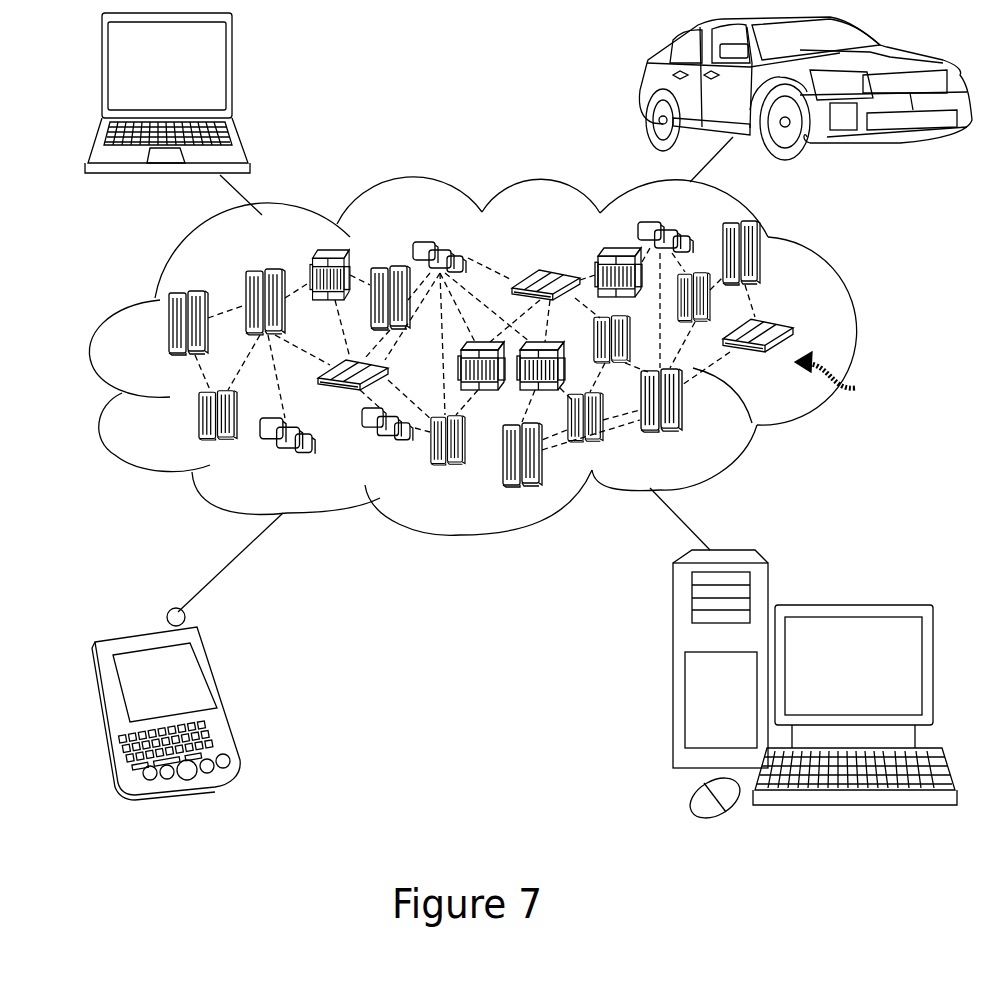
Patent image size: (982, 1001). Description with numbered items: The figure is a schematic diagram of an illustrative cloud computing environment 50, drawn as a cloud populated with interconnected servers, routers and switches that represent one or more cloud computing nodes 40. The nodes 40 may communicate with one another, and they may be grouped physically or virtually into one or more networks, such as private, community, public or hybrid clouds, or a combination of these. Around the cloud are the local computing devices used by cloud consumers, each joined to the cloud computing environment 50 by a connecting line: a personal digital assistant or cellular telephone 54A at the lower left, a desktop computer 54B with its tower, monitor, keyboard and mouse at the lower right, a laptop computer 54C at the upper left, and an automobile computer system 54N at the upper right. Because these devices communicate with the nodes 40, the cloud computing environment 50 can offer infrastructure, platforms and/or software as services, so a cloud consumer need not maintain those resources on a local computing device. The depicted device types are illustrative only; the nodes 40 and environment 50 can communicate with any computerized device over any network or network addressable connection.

The cloud computing nodes 40 is at (844, 380).
The cloud computing environment 50 is at (848, 335).
The personal digital assistant (PDA) or cellular telephone 54A is at (223, 695).
The desktop computer 54B is at (850, 605).
The laptop computer 54C is at (232, 70).
The automobile computer system 54N is at (645, 92).